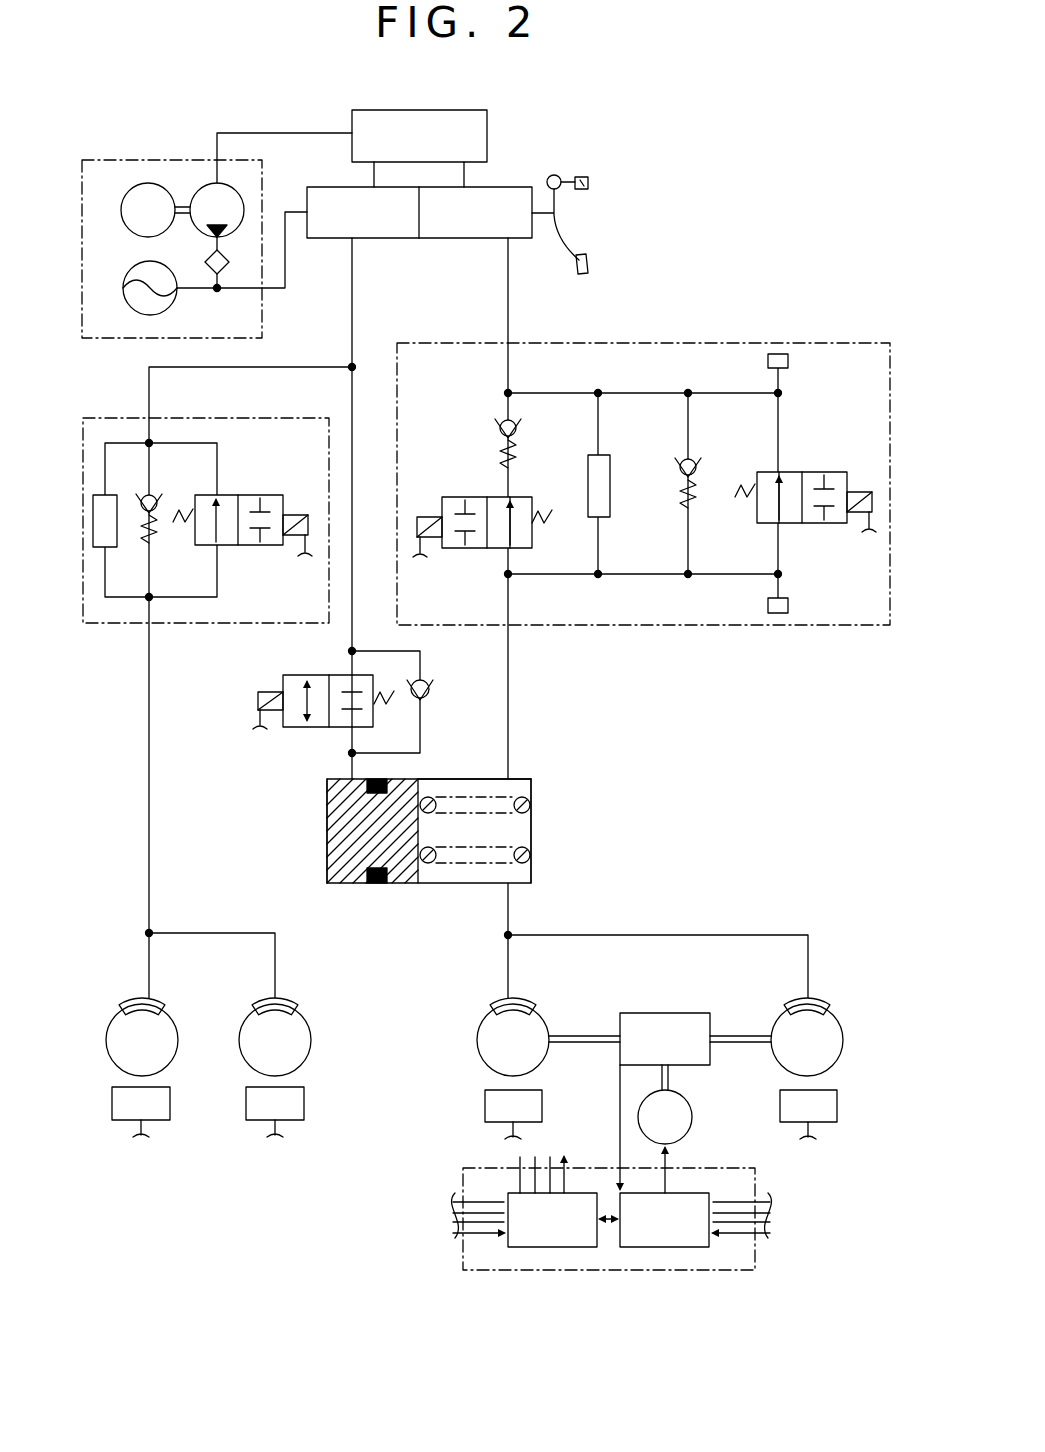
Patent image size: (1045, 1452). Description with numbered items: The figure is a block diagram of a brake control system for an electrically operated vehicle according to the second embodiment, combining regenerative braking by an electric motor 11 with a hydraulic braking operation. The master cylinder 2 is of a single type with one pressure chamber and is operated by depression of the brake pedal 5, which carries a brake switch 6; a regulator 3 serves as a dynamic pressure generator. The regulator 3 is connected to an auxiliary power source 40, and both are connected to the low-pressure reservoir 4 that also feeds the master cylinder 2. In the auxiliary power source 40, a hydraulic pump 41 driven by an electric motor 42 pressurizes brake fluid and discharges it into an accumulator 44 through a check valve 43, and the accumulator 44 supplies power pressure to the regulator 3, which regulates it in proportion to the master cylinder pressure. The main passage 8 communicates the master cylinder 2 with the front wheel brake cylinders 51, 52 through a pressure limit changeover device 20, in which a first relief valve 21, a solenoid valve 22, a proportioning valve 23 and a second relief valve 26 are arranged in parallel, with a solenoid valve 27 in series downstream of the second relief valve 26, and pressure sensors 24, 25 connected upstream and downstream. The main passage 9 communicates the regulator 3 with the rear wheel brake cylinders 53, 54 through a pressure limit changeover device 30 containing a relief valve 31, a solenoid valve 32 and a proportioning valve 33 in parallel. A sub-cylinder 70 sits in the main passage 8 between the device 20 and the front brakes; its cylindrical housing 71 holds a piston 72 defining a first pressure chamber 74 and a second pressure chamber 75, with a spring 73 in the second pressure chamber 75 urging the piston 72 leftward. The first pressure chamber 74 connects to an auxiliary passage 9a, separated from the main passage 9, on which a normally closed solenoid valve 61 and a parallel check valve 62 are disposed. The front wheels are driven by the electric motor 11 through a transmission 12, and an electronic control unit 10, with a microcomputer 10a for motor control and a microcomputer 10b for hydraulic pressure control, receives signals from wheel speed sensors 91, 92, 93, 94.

The master cylinder 2 is at (505, 187).
The regulator 3 is at (374, 238).
The low-pressure reservoir 4 is at (375, 108).
The brake pedal 5 is at (588, 262).
The brake switch 6 is at (590, 184).
The main passage 8 is at (508, 292).
The main passage 9 is at (352, 296).
The auxiliary passage 9a is at (352, 428).
The electronic control unit 10 is at (495, 1168).
The microcomputer 10a is at (695, 1156).
The microcomputer 10b is at (534, 1202).
The electric motor 11 is at (688, 1112).
The transmission 12 is at (658, 1012).
The pressure limit changeover device 20 is at (600, 343).
The first relief valve 21 is at (698, 480).
The solenoid valve 22 is at (794, 474).
The proportioning valve 23 is at (612, 480).
The pressure sensor 24 is at (790, 362).
The pressure sensor 25 is at (790, 604).
The second relief valve 26 is at (496, 426).
The solenoid valve 27 is at (475, 498).
The pressure limit changeover device 30 is at (173, 418).
The relief valve 31 is at (158, 498).
The solenoid valve 32 is at (244, 496).
The proportioning valve 33 is at (118, 498).
The auxiliary power source 40 is at (83, 158).
The hydraulic pump 41 is at (244, 183).
The electric motor 42 is at (134, 190).
The check valve 43 is at (204, 262).
The accumulator 44 is at (130, 272).
The wheel brake cylinder 51 is at (836, 1004).
The wheel brake cylinder 52 is at (526, 1004).
The wheel brake cylinder 53 is at (294, 1004).
The wheel brake cylinder 54 is at (154, 1000).
The solenoid valve 61 is at (300, 676).
The check valve 62 is at (434, 682).
The sub-cylinder 70 is at (368, 888).
The cylindrical housing 71 is at (528, 828).
The piston 72 is at (333, 824).
The spring 73 is at (468, 795).
The first pressure chamber 74 is at (328, 780).
The second pressure chamber 75 is at (528, 796).
The wheel speed sensor 91 is at (808, 1114).
The wheel speed sensor 92 is at (513, 1114).
The wheel speed sensor 93 is at (275, 1112).
The wheel speed sensor 94 is at (141, 1112).